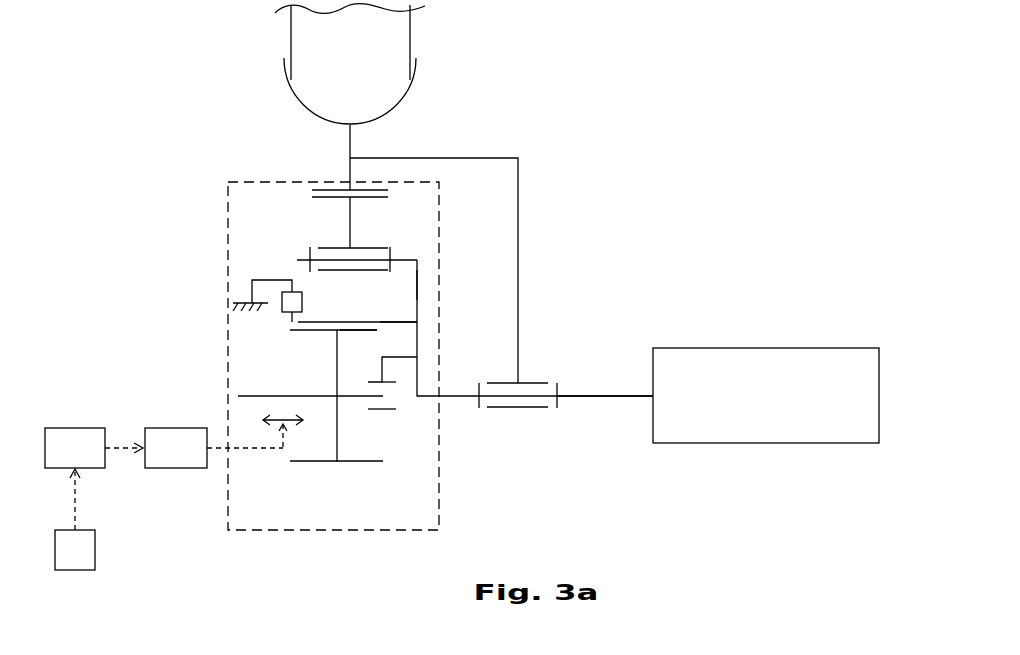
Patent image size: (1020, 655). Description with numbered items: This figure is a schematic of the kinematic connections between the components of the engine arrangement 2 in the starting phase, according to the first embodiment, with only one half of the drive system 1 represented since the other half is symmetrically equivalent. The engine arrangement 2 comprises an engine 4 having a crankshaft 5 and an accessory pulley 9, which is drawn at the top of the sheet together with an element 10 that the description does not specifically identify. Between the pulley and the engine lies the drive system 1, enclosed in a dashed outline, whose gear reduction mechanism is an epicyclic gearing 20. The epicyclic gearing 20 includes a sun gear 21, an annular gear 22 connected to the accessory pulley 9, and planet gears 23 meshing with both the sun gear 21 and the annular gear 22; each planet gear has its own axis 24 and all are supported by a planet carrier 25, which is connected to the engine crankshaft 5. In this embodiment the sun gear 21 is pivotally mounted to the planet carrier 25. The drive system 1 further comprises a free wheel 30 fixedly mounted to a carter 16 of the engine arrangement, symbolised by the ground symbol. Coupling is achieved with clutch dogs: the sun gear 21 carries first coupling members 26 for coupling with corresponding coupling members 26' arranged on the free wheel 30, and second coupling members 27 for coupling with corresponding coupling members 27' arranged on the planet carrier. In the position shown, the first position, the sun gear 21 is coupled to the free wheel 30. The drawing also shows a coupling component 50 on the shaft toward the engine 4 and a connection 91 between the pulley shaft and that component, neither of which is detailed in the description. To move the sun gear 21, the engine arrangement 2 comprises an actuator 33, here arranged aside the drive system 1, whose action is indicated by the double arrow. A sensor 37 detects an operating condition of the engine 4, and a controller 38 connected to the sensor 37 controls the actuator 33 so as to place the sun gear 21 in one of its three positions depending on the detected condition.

The drive system 1 is at (449, 487).
The engine arrangement 2 is at (650, 165).
The engine 4 is at (744, 406).
The crankshaft 5 is at (615, 396).
The accessory pulley 9 is at (352, 145).
The drum 10 is at (316, 52).
The carter 16 is at (235, 303).
The epicyclic gearing 20 is at (430, 284).
The sun gear 21 is at (334, 352).
The annular gear 22 is at (332, 190).
The planet gears 23 is at (352, 229).
The axis 24 is at (332, 262).
The planet carrier 25 is at (418, 304).
The first coupling members 26 is at (313, 352).
The coupling members 26' is at (295, 346).
The second coupling members 27 is at (378, 369).
The coupling members 27' is at (393, 303).
The free wheel 30 is at (301, 301).
The actuator 33 is at (170, 452).
The sensor 37 is at (78, 550).
The controller 38 is at (92, 427).
The clutch 50 is at (532, 383).
The bypass connection 91 is at (518, 228).